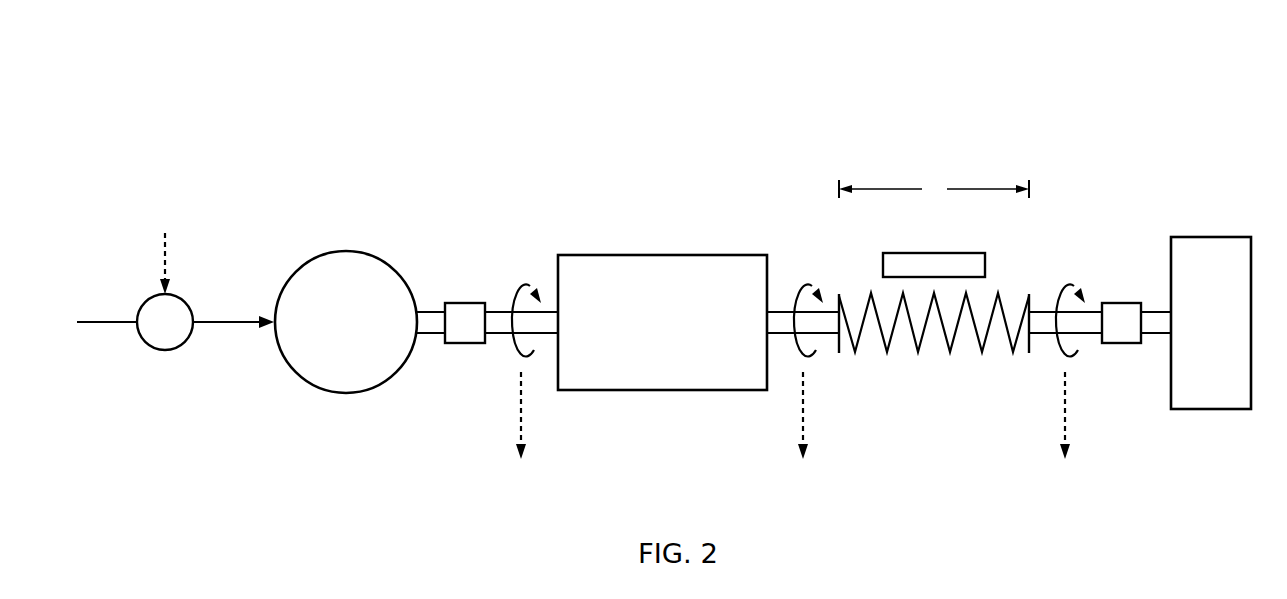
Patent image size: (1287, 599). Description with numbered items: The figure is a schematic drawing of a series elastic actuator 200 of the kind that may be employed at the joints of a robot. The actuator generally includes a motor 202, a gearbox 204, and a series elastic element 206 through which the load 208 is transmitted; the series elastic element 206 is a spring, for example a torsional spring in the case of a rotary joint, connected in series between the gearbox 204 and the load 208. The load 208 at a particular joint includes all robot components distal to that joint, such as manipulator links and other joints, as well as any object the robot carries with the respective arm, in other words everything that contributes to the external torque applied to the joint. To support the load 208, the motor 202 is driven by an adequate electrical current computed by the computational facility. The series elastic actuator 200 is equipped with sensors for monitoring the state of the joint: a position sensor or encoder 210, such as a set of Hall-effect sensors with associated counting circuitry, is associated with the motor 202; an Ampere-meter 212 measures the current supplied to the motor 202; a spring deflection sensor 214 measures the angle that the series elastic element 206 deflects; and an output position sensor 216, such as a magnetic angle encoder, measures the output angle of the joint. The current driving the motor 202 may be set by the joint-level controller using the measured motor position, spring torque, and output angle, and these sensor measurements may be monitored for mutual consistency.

The series elastic actuator 200 is at (280, 66).
The motor 202 is at (316, 257).
The gearbox 204 is at (692, 254).
The series elastic element 206 is at (921, 342).
The load 208 is at (1218, 236).
The position sensor or encoder 210 is at (465, 302).
The Ampere-meter 212 is at (152, 348).
The spring deflection sensor 214 is at (951, 252).
The output position sensor 216 is at (1120, 302).